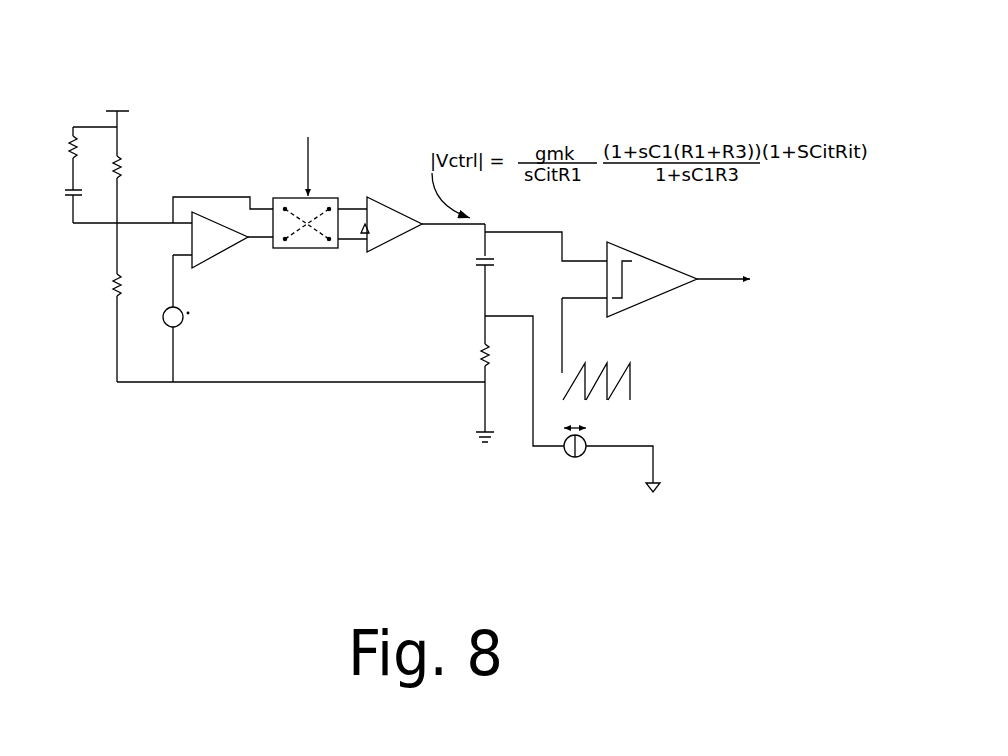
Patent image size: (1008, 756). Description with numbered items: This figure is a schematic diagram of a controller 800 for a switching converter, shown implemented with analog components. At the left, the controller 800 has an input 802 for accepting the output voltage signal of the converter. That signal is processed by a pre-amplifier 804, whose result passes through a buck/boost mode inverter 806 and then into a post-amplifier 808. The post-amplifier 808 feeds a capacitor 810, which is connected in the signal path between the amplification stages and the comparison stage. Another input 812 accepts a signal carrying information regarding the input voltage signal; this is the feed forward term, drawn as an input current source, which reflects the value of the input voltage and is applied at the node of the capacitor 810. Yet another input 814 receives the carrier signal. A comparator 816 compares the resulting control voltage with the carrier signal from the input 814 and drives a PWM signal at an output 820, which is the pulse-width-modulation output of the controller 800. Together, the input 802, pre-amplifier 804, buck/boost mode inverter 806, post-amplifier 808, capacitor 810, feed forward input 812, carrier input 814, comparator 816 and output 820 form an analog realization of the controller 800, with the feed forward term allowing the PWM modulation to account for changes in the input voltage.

The controller 800 is at (312, 78).
The input 802 is at (129, 68).
The pre-amplifier 804 is at (247, 233).
The buck/boost mode inverter 806 is at (320, 197).
The post-amplifier 808 is at (366, 253).
The capacitor 810 is at (463, 287).
The another input 812 is at (577, 457).
The yet another input 814 is at (660, 424).
The comparator 816 is at (664, 264).
The output 820 is at (808, 304).